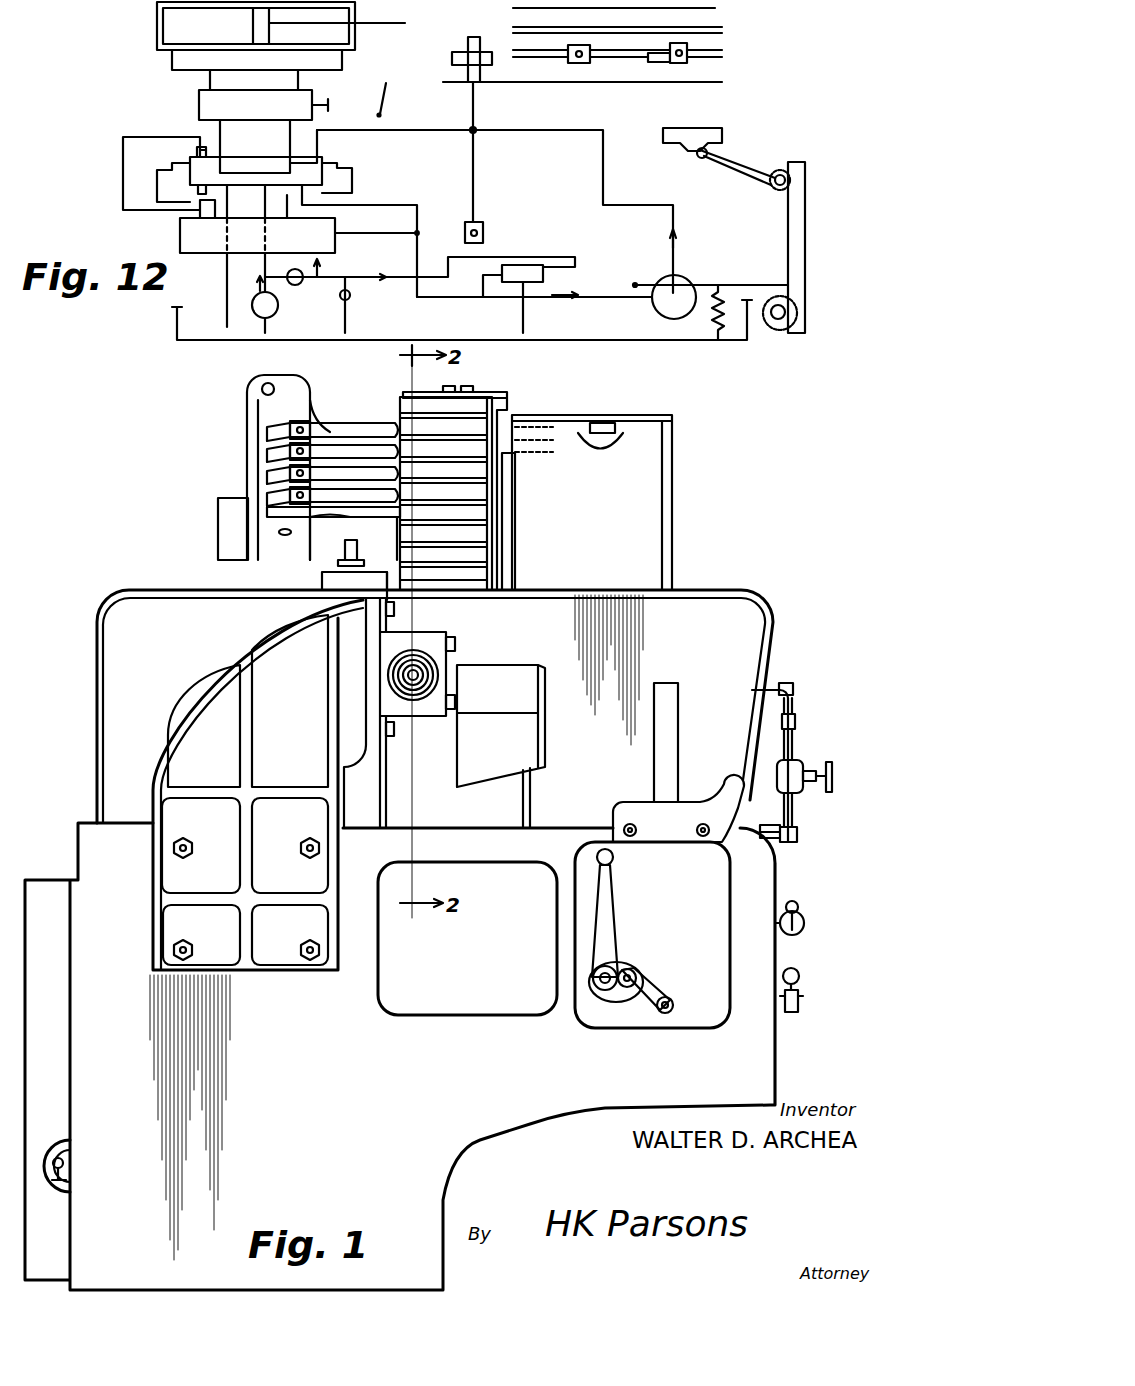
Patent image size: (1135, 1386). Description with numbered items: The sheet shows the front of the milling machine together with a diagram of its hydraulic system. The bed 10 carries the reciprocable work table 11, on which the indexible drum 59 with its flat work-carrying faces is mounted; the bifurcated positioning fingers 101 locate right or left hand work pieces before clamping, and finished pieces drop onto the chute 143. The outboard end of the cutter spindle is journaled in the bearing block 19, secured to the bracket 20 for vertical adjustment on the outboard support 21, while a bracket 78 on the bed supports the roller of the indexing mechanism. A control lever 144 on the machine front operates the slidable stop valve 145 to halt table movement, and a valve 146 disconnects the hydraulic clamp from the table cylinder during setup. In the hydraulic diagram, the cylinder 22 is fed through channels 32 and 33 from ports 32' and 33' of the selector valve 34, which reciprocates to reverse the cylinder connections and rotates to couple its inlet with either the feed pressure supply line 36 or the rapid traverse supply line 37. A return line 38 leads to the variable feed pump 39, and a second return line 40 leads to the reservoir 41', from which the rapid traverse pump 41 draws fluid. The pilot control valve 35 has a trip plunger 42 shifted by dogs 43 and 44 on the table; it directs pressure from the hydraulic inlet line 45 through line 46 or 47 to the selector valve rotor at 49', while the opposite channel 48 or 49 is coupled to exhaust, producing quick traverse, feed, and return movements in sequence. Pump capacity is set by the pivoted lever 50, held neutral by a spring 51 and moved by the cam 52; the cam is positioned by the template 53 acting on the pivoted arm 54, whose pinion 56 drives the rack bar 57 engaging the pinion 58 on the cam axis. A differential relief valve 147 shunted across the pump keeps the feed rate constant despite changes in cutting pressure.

In FIG. 12, the cylinder 22 is at (157, 27).
In FIG. 12, the channel 33 is at (229, 70).
In FIG. 12, the slidable stop valve 145 is at (255, 70).
In FIG. 12, the channel 32 is at (349, 93).
In FIG. 12, the selector valve rotor 49' is at (169, 121).
In FIG. 12, the selector valve 34 is at (199, 150).
In FIG. 12, the port 33' is at (256, 162).
In FIG. 12, the port 32' is at (322, 146).
In FIG. 12, the line 46 is at (157, 185).
In FIG. 12, the line 47 is at (122, 195).
In FIG. 12, the channel 48 is at (352, 185).
In FIG. 12, the channel 49 is at (214, 211).
In FIG. 12, the pilot control valve 35 is at (213, 255).
In FIG. 12, the rapid traverse supply line 37 is at (265, 268).
In FIG. 12, the second return line 40 is at (227, 294).
In FIG. 12, the rapid traverse pump 41 is at (290, 312).
In FIG. 12, the hydraulic inlet line 45 is at (323, 268).
In FIG. 12, the return line 38 is at (417, 217).
In FIG. 12, the trip plunger 42 is at (483, 238).
In FIG. 12, the feed pressure supply line 36 is at (430, 112).
In FIG. 12, the differential relief valve 147 is at (523, 265).
In FIG. 12, the dog 44 is at (572, 64).
In FIG. 12, the dog 43 is at (678, 67).
In FIG. 12, the template 53 is at (722, 133).
In FIG. 12, the pivoted arm 54 is at (729, 158).
In FIG. 12, the pinion 56 is at (783, 170).
In FIG. 12, the rack bar 57 is at (805, 211).
In FIG. 12, the pivoted lever 50 is at (738, 284).
In FIG. 12, the variable feed pump 39 is at (666, 315).
In FIG. 12, the spring 51 is at (716, 326).
In FIG. 12, the pinion 58 is at (781, 331).
In FIG. 12, the cam 52 is at (772, 321).
In FIG. 12, the reservoir 41' is at (462, 334).
In FIG. 1, the fingers 101 is at (320, 430).
In FIG. 1, the indexible drum 59 is at (400, 400).
In FIG. 1, the bearing block 19 is at (440, 630).
In FIG. 1, the outboard support 21 is at (200, 717).
In FIG. 1, the bracket 20 is at (383, 762).
In FIG. 1, the chute 143 is at (478, 782).
In FIG. 1, the bracket 78 is at (716, 792).
In FIG. 1, the valve 146 is at (801, 768).
In FIG. 1, the work table 11 is at (747, 813).
In FIG. 1, the control lever 144 is at (608, 913).
In FIG. 1, the bed 10 is at (752, 1043).